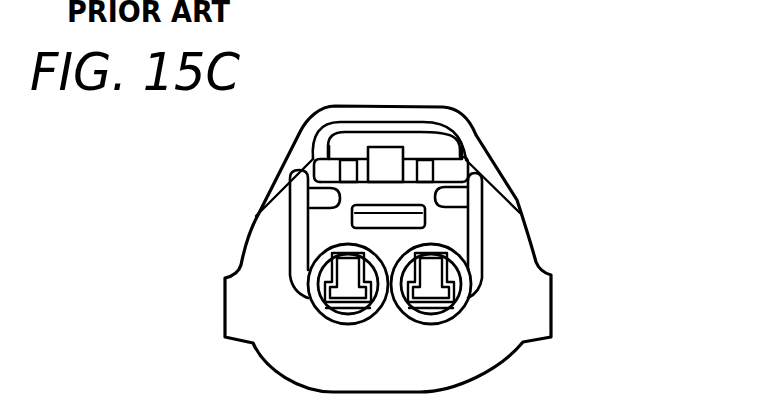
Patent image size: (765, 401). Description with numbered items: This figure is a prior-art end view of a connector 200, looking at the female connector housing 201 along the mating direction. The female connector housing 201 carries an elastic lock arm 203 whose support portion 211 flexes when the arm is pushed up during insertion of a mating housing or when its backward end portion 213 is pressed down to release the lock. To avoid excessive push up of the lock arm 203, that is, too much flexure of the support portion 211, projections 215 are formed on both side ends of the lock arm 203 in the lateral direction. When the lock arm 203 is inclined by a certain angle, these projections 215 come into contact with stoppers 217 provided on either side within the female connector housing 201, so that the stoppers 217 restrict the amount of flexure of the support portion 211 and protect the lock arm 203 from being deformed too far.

The connector 200 is at (358, 5).
The female connector housing 201 is at (537, 258).
The lock arm 203 is at (419, 145).
The support portion 211 is at (373, 193).
The backward end portion 213 is at (428, 127).
The projections 215 is at (323, 172).
The stoppers 217 is at (318, 200).